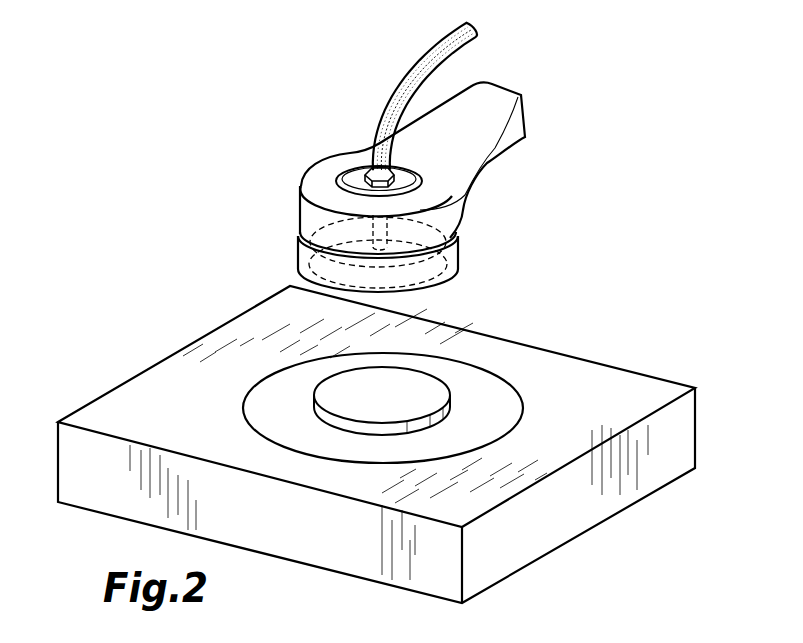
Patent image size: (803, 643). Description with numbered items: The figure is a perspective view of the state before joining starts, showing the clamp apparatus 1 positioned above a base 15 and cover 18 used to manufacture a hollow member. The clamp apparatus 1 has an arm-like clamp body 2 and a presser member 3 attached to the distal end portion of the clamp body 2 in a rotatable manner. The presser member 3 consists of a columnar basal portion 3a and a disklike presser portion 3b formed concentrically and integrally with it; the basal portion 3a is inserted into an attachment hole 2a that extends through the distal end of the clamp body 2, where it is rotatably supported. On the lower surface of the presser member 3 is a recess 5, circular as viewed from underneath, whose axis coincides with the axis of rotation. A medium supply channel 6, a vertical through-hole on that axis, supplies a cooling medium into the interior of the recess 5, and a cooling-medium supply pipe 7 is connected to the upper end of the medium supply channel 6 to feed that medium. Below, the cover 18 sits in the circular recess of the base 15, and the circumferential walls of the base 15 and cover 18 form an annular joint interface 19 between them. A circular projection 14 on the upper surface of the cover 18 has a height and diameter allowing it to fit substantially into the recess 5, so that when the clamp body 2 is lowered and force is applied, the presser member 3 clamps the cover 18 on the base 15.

The clamp apparatus 1 is at (515, 178).
The clamp body 2 is at (525, 123).
The attachment hole 2a is at (343, 176).
The presser member 3 is at (461, 251).
The basal portion 3a is at (361, 173).
The presser portion 3b is at (300, 257).
The recess 5 is at (449, 283).
The medium supply channel 6 is at (312, 217).
The cooling-medium supply pipe 7 is at (410, 72).
The projection 14 is at (452, 395).
The base 15 is at (160, 362).
The cover 18 is at (473, 380).
The annular joint interface 19 is at (243, 408).